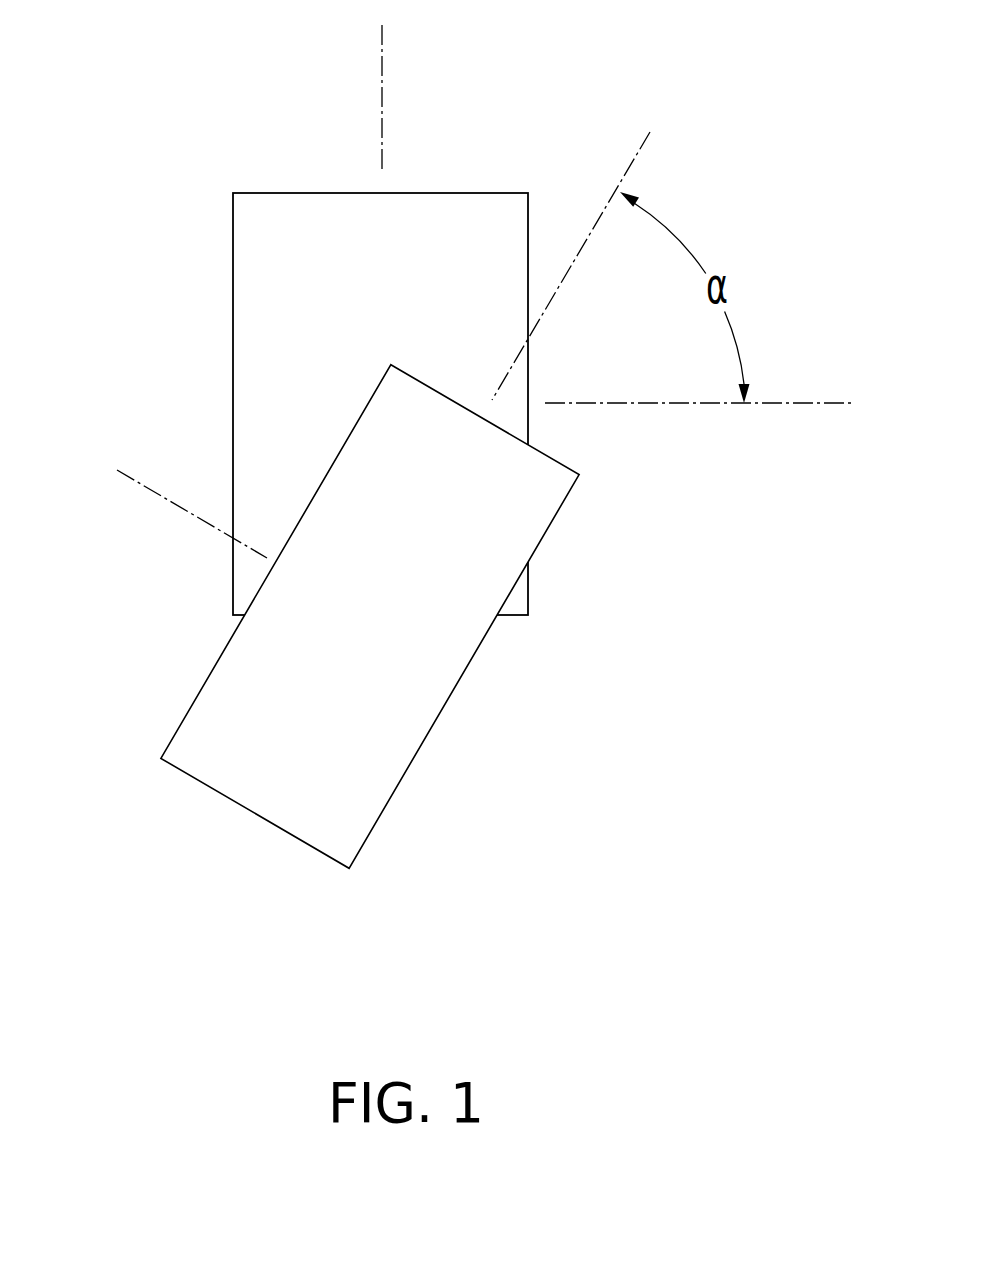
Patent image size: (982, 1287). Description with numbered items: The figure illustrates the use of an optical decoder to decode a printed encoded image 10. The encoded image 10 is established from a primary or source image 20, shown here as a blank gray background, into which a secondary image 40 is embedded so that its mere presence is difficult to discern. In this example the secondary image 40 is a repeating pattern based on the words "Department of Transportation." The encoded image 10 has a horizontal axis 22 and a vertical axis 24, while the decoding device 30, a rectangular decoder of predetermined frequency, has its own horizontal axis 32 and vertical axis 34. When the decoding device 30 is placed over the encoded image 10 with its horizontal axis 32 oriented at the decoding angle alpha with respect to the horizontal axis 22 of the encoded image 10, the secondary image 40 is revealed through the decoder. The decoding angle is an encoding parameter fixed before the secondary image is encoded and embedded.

The encoded image 10 is at (232, 263).
The primary image 20 is at (250, 444).
The horizontal axis of the encoded image 22 is at (840, 463).
The vertical axis of the encoded image 24 is at (383, 82).
The decoding device 30 is at (397, 792).
The horizontal axis of the decoding device 32 is at (643, 140).
The vertical axis of the decoding device 34 is at (163, 497).
The secondary image 40 is at (497, 540).